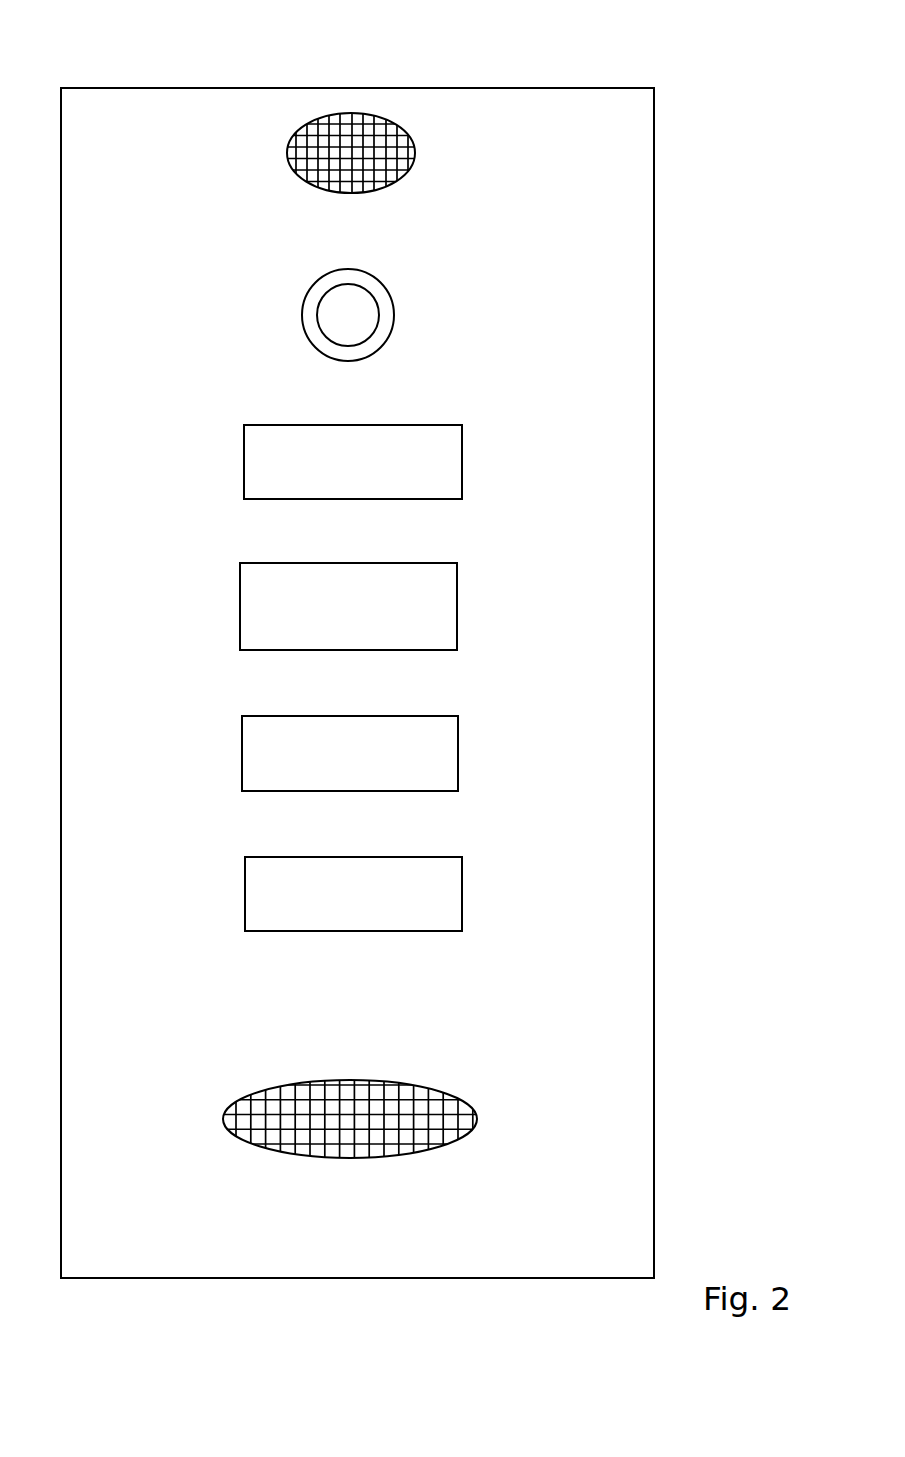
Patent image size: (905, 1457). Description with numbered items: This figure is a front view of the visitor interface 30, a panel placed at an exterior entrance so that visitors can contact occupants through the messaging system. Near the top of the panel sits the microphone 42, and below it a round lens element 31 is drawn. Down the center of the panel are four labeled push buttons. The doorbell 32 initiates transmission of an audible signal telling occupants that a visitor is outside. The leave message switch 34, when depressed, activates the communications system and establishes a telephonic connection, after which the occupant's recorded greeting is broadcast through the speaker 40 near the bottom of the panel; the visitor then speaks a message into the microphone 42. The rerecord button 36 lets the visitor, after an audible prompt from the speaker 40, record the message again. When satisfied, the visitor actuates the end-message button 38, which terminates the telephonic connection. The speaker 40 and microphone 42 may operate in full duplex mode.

The visitor interface 30 is at (349, 643).
The microphone 42 is at (392, 113).
The camera lens 31 is at (271, 294).
The doorbell 32 is at (283, 472).
The leave message switch 34 is at (278, 609).
The Rerecord button 36 is at (281, 761).
The end-message button 38 is at (284, 904).
The speaker 40 is at (288, 1152).